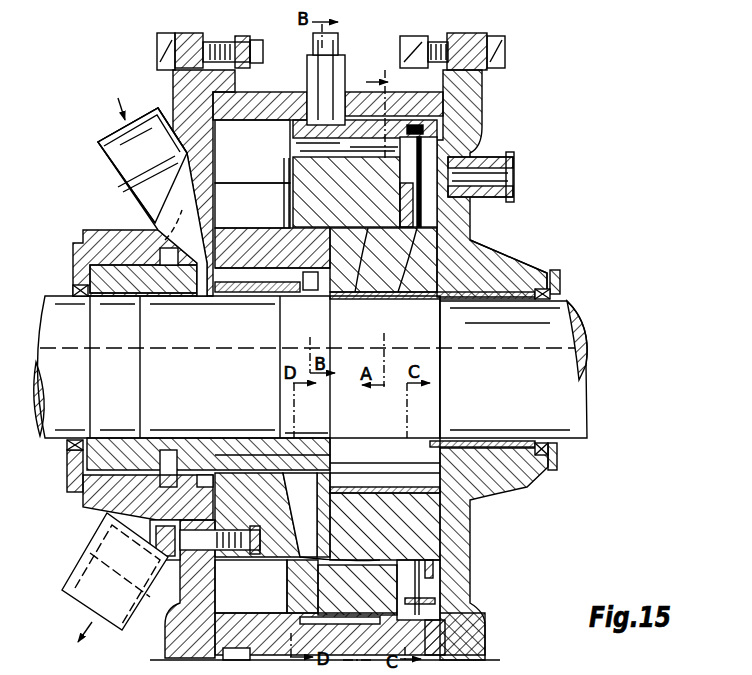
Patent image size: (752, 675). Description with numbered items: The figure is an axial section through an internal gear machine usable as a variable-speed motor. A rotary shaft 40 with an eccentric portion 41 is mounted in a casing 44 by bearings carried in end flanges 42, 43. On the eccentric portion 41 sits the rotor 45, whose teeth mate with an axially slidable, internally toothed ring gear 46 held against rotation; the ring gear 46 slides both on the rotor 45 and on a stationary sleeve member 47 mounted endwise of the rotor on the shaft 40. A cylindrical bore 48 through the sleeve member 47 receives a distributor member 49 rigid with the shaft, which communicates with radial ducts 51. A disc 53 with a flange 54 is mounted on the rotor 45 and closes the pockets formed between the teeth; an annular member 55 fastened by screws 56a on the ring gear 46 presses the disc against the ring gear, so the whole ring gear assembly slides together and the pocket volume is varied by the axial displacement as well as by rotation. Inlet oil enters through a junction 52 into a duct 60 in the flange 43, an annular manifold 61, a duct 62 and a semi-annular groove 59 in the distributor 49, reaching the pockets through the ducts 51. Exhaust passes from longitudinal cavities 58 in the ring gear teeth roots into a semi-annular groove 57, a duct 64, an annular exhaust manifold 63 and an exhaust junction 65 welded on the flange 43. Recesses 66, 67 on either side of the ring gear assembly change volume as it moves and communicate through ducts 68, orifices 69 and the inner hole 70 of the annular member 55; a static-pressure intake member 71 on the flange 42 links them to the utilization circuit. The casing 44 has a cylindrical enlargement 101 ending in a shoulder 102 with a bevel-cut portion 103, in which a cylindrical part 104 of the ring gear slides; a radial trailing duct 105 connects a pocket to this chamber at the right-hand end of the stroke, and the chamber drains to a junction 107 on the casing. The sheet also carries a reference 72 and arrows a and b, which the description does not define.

The rotary shaft 40 is at (574, 404).
The eccentric portion 41 is at (385, 465).
The end flange 42 is at (552, 270).
The end flange 43 is at (105, 230).
The casing 44 is at (382, 105).
The rotor 45 is at (425, 253).
The ring gear 46 is at (367, 224).
The sleeve member 47 is at (242, 236).
The cylindrical bore 48 is at (282, 290).
The distributor member 49 is at (157, 297).
The ducts 51 is at (313, 480).
The junction 52 is at (122, 163).
The disc 53 is at (396, 281).
The flange 54 is at (413, 222).
The annular member 55 is at (422, 160).
The screws 56a is at (422, 613).
The semi-annular groove 57 is at (303, 428).
The longitudinal cavities 58 is at (313, 553).
The semi-annular groove 59 is at (310, 282).
The duct 60 is at (152, 202).
The annular manifold 61 is at (203, 297).
The duct 62 is at (243, 278).
The annular exhaust manifold 63 is at (165, 439).
The duct 64 is at (205, 439).
The exhaust junction 65 is at (106, 552).
The recess 66 is at (252, 151).
The recess 67 is at (432, 178).
The ducts 68 is at (293, 154).
The orifices 69 is at (425, 142).
The inner hole 70 is at (422, 195).
The intake member 71 is at (513, 196).
The base 72 is at (361, 558).
The cylindrical enlargement 101 is at (432, 570).
The shoulder 102 is at (253, 118).
The bevel-cut portion 103 is at (293, 130).
The cylindrical part 104 is at (483, 634).
The radial trailing duct 105 is at (316, 587).
The junction 107 is at (340, 46).
The inlet direction a is at (118, 98).
The outlet direction b is at (78, 621).